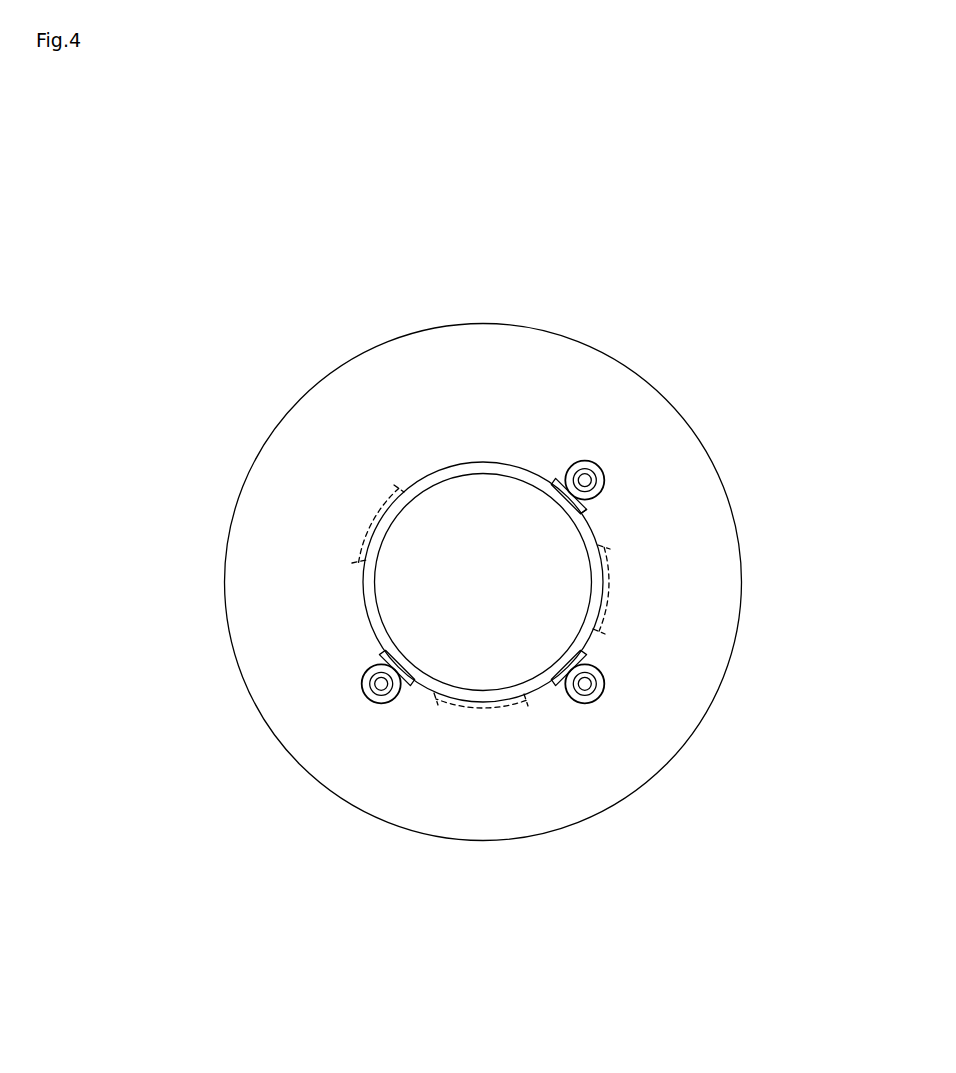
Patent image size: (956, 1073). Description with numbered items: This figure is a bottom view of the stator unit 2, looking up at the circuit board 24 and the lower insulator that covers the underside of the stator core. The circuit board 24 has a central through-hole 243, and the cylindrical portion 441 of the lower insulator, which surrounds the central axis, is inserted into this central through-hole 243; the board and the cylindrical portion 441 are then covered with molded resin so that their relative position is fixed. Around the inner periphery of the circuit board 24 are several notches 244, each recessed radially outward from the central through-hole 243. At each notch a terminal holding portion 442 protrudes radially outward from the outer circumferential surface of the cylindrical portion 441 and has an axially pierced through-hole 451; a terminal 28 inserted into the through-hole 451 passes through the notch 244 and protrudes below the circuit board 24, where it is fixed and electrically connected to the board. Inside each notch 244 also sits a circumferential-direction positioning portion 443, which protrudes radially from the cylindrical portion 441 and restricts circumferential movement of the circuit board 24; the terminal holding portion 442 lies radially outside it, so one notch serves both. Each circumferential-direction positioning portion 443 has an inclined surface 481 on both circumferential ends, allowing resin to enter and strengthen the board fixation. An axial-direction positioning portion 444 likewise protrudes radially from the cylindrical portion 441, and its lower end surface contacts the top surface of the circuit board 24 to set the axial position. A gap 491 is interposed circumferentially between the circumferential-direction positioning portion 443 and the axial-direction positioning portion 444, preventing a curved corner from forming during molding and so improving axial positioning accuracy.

The stator unit 2 is at (382, 153).
The circuit board 24 is at (313, 433).
The terminal 28 is at (383, 706).
The central through-hole 243 is at (545, 640).
The notch 244 is at (358, 702).
The cylindrical portion 441 is at (367, 594).
The terminal holding portion 442 is at (588, 460).
The circumferential-direction positioning portion 443 is at (565, 467).
The axial-direction positioning portion 444 is at (487, 716).
The through-hole 451 is at (603, 703).
The inclined surface 481 is at (592, 510).
The gap 491 is at (413, 703).